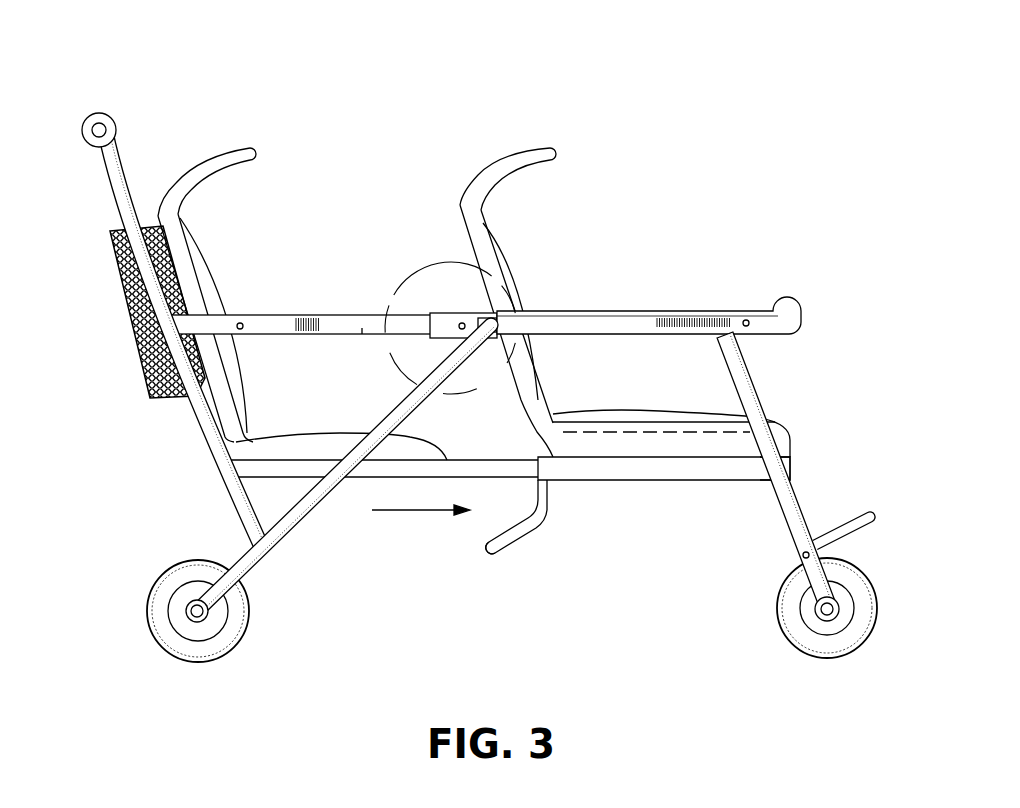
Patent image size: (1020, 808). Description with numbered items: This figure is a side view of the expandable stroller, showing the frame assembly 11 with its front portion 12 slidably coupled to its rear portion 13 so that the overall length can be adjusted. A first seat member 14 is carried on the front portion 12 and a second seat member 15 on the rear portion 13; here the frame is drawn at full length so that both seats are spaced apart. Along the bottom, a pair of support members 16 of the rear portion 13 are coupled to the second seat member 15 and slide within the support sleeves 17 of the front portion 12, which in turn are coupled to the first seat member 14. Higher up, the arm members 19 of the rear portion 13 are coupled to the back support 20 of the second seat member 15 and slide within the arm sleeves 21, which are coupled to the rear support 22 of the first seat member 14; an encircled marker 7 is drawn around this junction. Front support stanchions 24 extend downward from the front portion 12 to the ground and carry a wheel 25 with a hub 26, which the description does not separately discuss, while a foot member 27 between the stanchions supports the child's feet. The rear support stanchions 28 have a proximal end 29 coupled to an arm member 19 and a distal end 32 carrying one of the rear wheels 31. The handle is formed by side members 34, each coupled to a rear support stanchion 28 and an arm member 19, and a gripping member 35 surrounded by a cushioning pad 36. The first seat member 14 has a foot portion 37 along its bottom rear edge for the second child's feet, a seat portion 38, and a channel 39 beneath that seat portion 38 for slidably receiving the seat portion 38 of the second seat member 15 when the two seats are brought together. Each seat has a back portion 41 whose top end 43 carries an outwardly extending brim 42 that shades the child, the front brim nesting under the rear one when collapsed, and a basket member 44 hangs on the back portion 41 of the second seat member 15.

The section line 7- 7 is at (437, 265).
The frame assembly 11 is at (330, 535).
The front portion 12 is at (648, 468).
The rear portion 13 is at (285, 468).
The first seat member 14 is at (597, 442).
The second seat member 15 is at (250, 455).
The support members 16 is at (493, 478).
The support sleeves 17 is at (753, 477).
The arm members 19 is at (310, 317).
The back support 20 is at (217, 373).
The arm sleeves 21 is at (657, 311).
The rear support 22 is at (362, 328).
The front support stanchions 24 is at (792, 486).
The rear wheel 25 is at (847, 640).
The rear axle 26 is at (826, 618).
The foot member 27 is at (868, 516).
The rear support stanchions 28 is at (330, 484).
The proximal end 29 is at (510, 318).
The rear wheels 31 is at (193, 651).
The distal end 32 is at (190, 614).
The side members 34 is at (224, 455).
The gripping member 35 is at (112, 118).
The pad 36 is at (98, 112).
The foot portion 37 is at (494, 549).
The seat portion 38 is at (335, 437).
The channel 39 is at (677, 443).
The back portion 41 is at (173, 245).
The brim 42 is at (513, 167).
The top end 43 is at (180, 214).
The basket member 44 is at (118, 270).